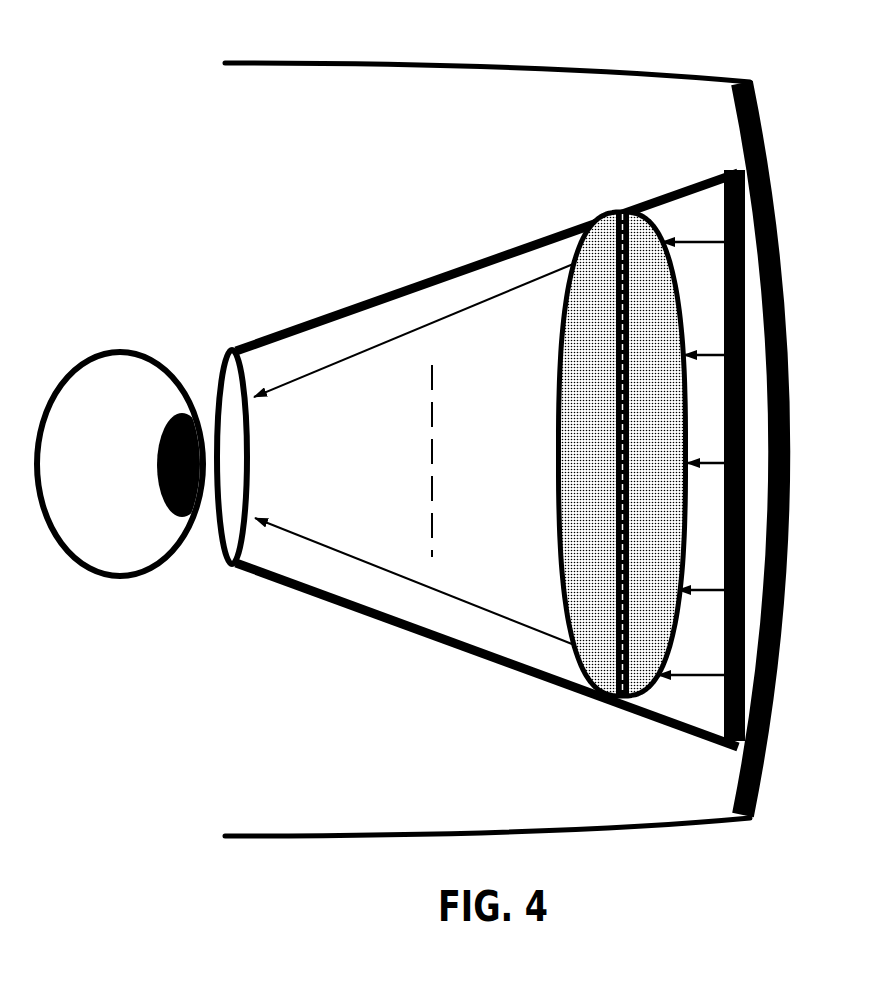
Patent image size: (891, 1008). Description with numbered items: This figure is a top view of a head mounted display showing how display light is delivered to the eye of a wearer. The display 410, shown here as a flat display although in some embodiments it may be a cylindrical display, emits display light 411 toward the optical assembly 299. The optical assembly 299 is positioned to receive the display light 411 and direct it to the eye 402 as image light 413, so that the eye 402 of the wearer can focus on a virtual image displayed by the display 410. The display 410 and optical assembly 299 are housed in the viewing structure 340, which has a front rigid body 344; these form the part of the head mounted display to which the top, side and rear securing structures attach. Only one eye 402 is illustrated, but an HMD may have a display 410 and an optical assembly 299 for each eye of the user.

The viewing structure 340 is at (413, 63).
The front rigid body 344 is at (745, 170).
The eye 402 is at (93, 348).
The display 410 is at (726, 176).
The display light 411 is at (693, 479).
The image light 413 is at (416, 454).
The optical assembly 299 is at (600, 216).